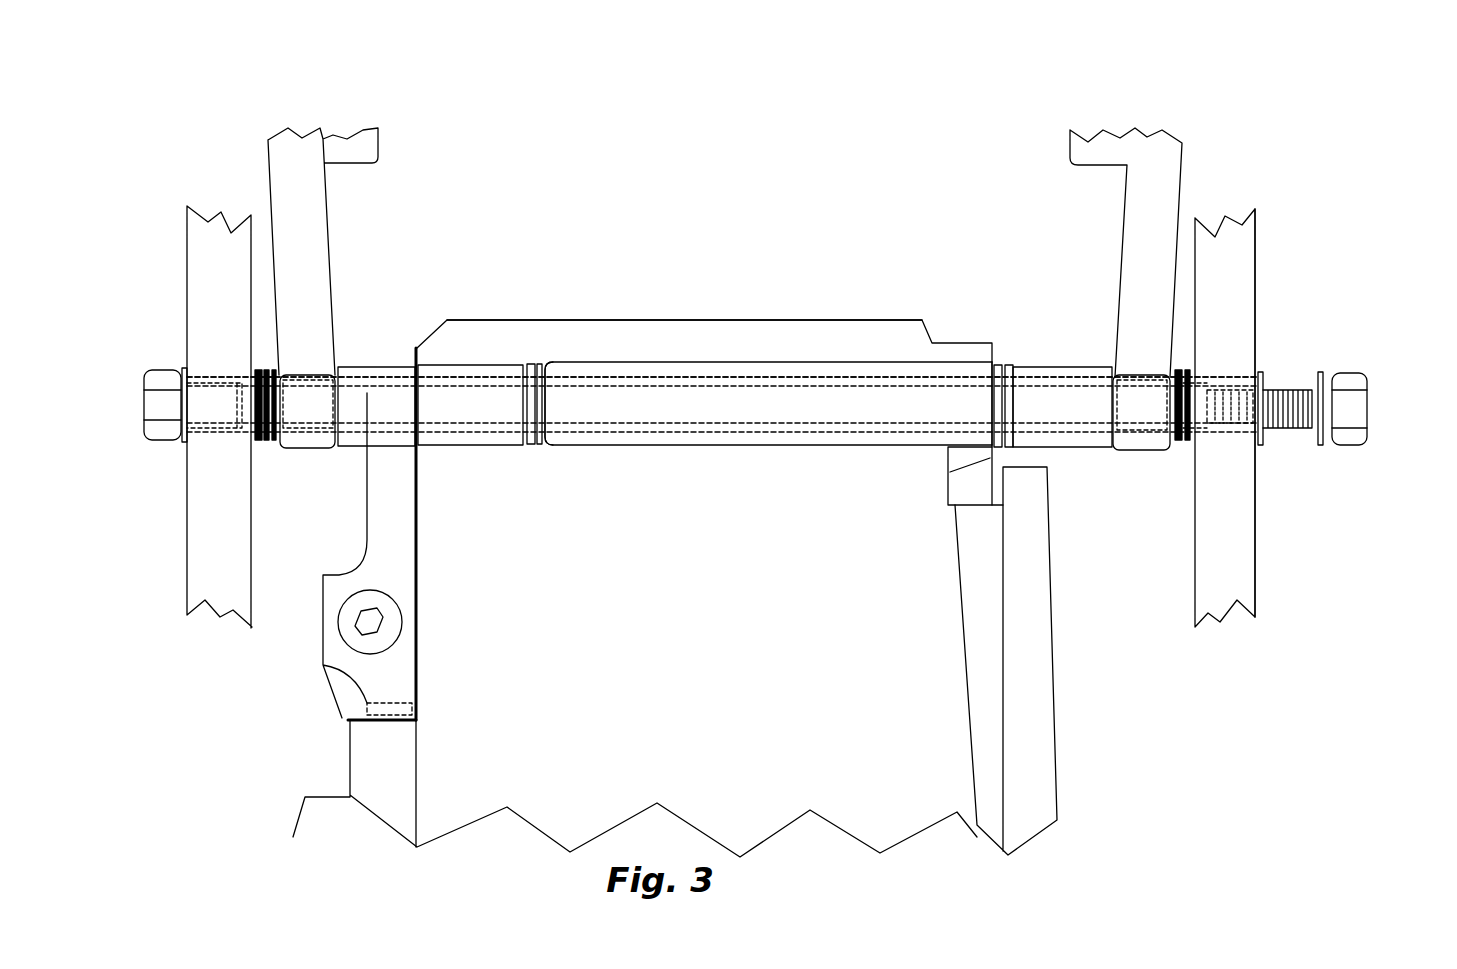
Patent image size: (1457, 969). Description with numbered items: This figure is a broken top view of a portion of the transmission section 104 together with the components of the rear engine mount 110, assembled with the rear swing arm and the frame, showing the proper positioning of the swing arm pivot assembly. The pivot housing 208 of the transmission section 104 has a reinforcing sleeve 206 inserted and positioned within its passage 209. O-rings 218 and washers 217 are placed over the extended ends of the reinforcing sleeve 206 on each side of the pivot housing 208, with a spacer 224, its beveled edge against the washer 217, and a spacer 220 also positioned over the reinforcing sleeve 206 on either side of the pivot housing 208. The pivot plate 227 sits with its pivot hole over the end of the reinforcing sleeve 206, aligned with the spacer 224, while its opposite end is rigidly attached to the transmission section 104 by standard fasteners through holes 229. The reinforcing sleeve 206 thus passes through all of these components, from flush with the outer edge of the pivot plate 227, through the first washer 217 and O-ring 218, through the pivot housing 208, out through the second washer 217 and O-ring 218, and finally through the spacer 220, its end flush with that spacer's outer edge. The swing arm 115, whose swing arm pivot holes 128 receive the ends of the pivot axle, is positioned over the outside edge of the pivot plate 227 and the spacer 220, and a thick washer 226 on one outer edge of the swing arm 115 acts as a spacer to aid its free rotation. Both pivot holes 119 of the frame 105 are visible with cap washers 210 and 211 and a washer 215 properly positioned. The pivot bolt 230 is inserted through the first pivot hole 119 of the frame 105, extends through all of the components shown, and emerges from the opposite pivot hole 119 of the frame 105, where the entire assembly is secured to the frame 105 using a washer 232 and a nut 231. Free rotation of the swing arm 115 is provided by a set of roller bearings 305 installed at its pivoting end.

The transmission section 104 is at (937, 763).
The frame 105 is at (187, 237).
The rear engine mount 110 is at (667, 207).
The swing arm 115 is at (333, 297).
The pivot hole 119 is at (1253, 330).
The swing arm pivot hole 128 is at (305, 367).
The reinforcing sleeve 206 is at (657, 360).
The pivot housing 208 is at (743, 330).
The passage 209 is at (792, 365).
The cap washer 210 is at (207, 410).
The cap washer 211 is at (246, 400).
The washer 215 is at (257, 440).
The washer 217 is at (528, 363).
The O-ring 218 is at (542, 365).
The spacer 220 is at (1062, 367).
The spacer 224 is at (470, 440).
The thick washer 226 is at (272, 445).
The pivot plate 227 is at (322, 628).
The hole 229 is at (418, 707).
The pivot bolt 230 is at (157, 412).
The nut 231 is at (1343, 447).
The washer 232 is at (1322, 447).
The roller bearing 305 is at (283, 400).